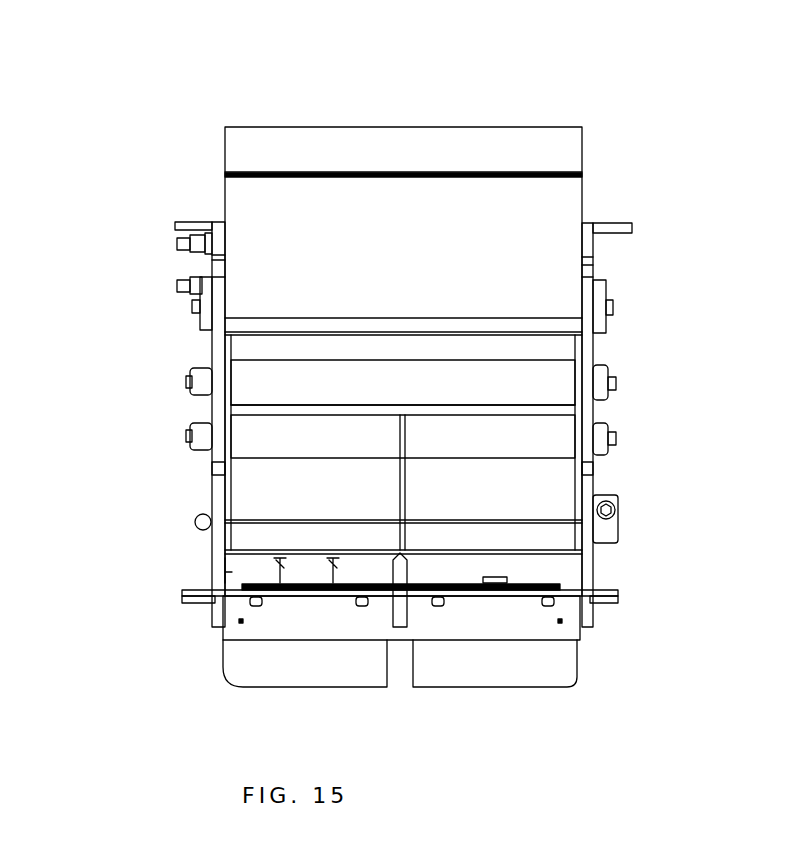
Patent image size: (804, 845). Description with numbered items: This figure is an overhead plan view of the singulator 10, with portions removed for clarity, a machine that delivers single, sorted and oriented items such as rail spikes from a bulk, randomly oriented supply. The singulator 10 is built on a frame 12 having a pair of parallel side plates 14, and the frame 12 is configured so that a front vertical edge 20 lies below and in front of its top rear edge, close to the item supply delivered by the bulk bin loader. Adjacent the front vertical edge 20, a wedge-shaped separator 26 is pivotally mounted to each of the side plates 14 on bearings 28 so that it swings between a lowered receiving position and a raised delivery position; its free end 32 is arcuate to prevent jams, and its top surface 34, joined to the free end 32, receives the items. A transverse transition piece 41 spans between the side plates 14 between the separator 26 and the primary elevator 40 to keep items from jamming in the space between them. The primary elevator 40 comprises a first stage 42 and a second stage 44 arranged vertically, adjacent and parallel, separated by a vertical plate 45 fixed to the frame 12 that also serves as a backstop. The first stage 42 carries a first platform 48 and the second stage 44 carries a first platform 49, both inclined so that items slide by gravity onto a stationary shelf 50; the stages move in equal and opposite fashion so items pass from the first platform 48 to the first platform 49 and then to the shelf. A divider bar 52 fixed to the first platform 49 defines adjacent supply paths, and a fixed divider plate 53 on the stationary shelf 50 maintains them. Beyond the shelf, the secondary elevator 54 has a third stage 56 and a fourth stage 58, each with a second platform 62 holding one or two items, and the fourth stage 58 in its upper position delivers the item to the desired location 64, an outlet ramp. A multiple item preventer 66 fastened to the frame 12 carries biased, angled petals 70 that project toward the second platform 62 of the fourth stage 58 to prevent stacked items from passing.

The singulator 10 is at (213, 96).
The frame 12 is at (587, 562).
The side plates 14 is at (587, 357).
The front vertical edge 20 is at (590, 222).
The separator 26 is at (587, 128).
The bearings 28 is at (597, 290).
The free end 32 is at (331, 127).
The top surface 34 is at (435, 239).
The primary elevator 40 is at (200, 413).
The transverse transition piece 41 is at (560, 345).
The first stage 42 is at (612, 378).
The second stage 44 is at (583, 428).
The vertical plate 45 is at (583, 415).
The first platform 48 is at (420, 391).
The first platform 49 is at (490, 449).
The stationary shelf 50 is at (583, 490).
The divider bar 52 is at (397, 437).
The divider plate 53 is at (397, 487).
The secondary elevator 54 is at (128, 563).
The third stage 56 is at (583, 535).
The fourth stage 58 is at (583, 573).
The second platform 62 is at (350, 546).
The desired location 64 is at (222, 627).
The multiple item preventer 66 is at (252, 568).
The petals 70 is at (360, 563).